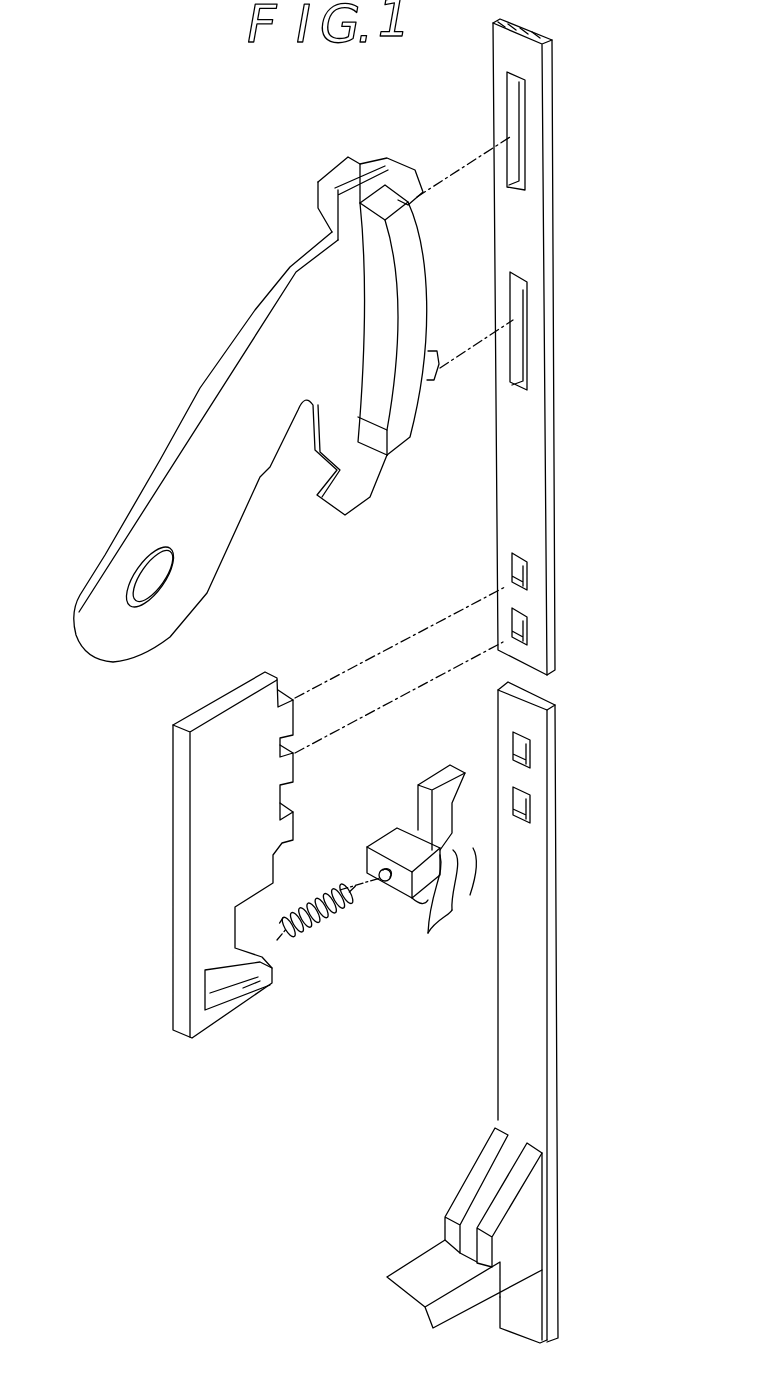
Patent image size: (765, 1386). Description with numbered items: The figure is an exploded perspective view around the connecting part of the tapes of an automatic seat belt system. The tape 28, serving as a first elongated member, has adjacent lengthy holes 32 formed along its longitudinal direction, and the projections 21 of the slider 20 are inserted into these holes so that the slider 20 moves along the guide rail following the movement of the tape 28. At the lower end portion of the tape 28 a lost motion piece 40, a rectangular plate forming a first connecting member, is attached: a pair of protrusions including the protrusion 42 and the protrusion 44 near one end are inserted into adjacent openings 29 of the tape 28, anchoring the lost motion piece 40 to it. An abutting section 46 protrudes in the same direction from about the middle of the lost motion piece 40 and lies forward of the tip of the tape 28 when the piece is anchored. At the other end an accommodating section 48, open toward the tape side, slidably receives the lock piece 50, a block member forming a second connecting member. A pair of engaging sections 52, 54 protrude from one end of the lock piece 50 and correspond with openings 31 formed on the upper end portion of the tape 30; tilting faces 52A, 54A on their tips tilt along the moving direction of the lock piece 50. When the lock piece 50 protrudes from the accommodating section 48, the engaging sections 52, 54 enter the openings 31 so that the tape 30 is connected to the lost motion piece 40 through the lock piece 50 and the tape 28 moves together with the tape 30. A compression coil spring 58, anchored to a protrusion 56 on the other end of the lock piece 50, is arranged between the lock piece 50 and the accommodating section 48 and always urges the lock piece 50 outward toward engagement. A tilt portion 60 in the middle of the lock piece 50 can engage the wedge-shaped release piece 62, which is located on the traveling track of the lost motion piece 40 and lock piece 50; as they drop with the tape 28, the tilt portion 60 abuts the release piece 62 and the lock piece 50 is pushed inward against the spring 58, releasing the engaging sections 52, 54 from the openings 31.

The slider 20 is at (255, 310).
The projections 21 is at (415, 178).
The tape 28 is at (555, 483).
The openings 29 is at (520, 575).
The tape 30 is at (557, 985).
The openings 31 is at (522, 752).
The lengthy holes 32 is at (512, 140).
The lost motion piece 40 is at (226, 836).
The protrusion 42 is at (295, 700).
The protrusion 44 is at (297, 773).
The abutting section 46 is at (295, 833).
The accommodating section 48 is at (258, 955).
The lock piece 50 is at (415, 847).
The engaging section 52 is at (435, 777).
The tilting face 52A is at (473, 795).
The engaging section 54 is at (459, 894).
The tilting face 54A is at (457, 850).
The protrusion 56 is at (388, 888).
The compression coil spring 58 is at (317, 930).
The tilt portion 60 is at (433, 895).
The release piece 62 is at (462, 1182).